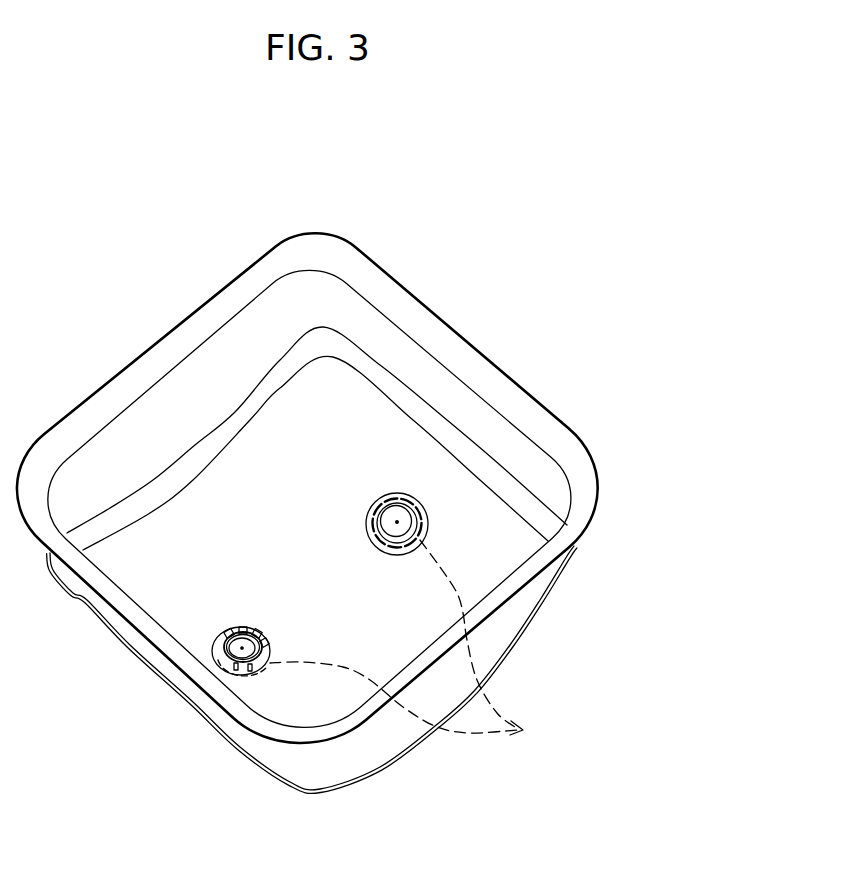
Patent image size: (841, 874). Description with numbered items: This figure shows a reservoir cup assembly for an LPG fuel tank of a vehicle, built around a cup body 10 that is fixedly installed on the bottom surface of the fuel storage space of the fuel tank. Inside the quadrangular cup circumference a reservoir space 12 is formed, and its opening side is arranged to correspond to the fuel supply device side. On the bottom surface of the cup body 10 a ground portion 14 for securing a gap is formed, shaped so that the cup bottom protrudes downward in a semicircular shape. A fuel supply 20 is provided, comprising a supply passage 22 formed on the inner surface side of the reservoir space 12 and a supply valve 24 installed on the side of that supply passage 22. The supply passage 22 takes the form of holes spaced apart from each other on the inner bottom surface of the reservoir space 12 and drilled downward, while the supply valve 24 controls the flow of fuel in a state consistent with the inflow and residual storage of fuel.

The cup body 10 is at (128, 260).
The reservoir space 12 is at (358, 393).
The ground portion 14 is at (375, 770).
The fuel supply 20 is at (432, 500).
The supply passage 22 is at (412, 649).
The supply valve 24 is at (398, 500).